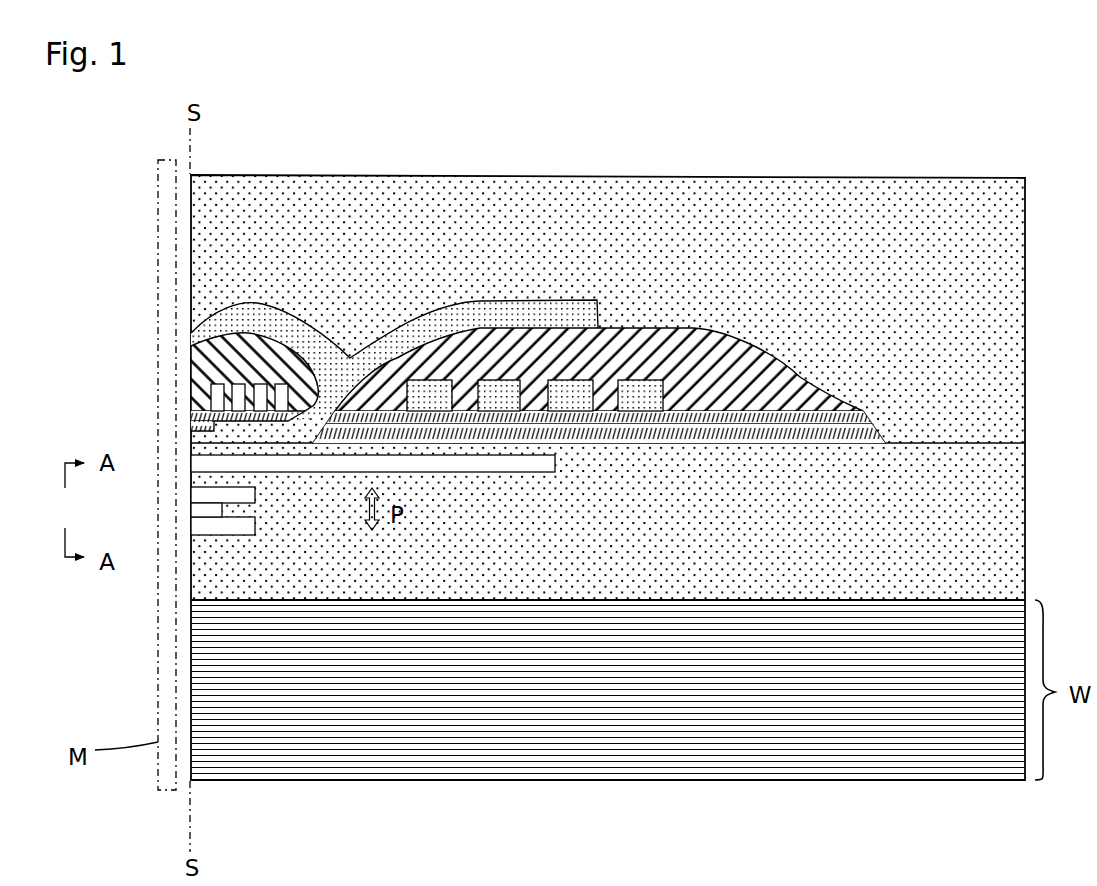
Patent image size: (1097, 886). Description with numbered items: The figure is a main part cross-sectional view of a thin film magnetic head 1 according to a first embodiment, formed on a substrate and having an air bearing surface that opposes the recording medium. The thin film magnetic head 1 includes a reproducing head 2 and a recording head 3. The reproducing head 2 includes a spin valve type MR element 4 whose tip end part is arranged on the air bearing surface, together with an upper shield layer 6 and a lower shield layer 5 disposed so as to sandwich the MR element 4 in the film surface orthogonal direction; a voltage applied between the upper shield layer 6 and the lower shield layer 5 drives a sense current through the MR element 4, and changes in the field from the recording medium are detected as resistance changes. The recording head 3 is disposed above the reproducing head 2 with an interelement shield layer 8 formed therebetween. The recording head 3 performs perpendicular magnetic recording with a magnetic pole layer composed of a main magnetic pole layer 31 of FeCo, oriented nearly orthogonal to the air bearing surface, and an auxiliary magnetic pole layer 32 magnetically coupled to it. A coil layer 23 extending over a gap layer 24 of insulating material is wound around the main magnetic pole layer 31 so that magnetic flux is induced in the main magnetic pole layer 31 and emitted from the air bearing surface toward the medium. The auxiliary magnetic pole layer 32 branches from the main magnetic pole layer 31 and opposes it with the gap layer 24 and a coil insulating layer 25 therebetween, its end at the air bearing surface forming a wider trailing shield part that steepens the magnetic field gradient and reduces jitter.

The thin film magnetic head 1 is at (1035, 177).
The reproducing head 2 is at (225, 509).
The recording head 3 is at (469, 273).
The MR element 4 is at (192, 510).
The lower shield layer 5 is at (192, 527).
The upper shield layer 6 is at (192, 496).
The interelement shield layer 8 is at (192, 463).
The coil layer 23 is at (278, 383).
The gap layer 24 is at (192, 417).
The coil insulating layer 25 is at (192, 356).
The main magnetic pole layer 31 is at (192, 432).
The auxiliary magnetic pole layer 32 is at (192, 333).